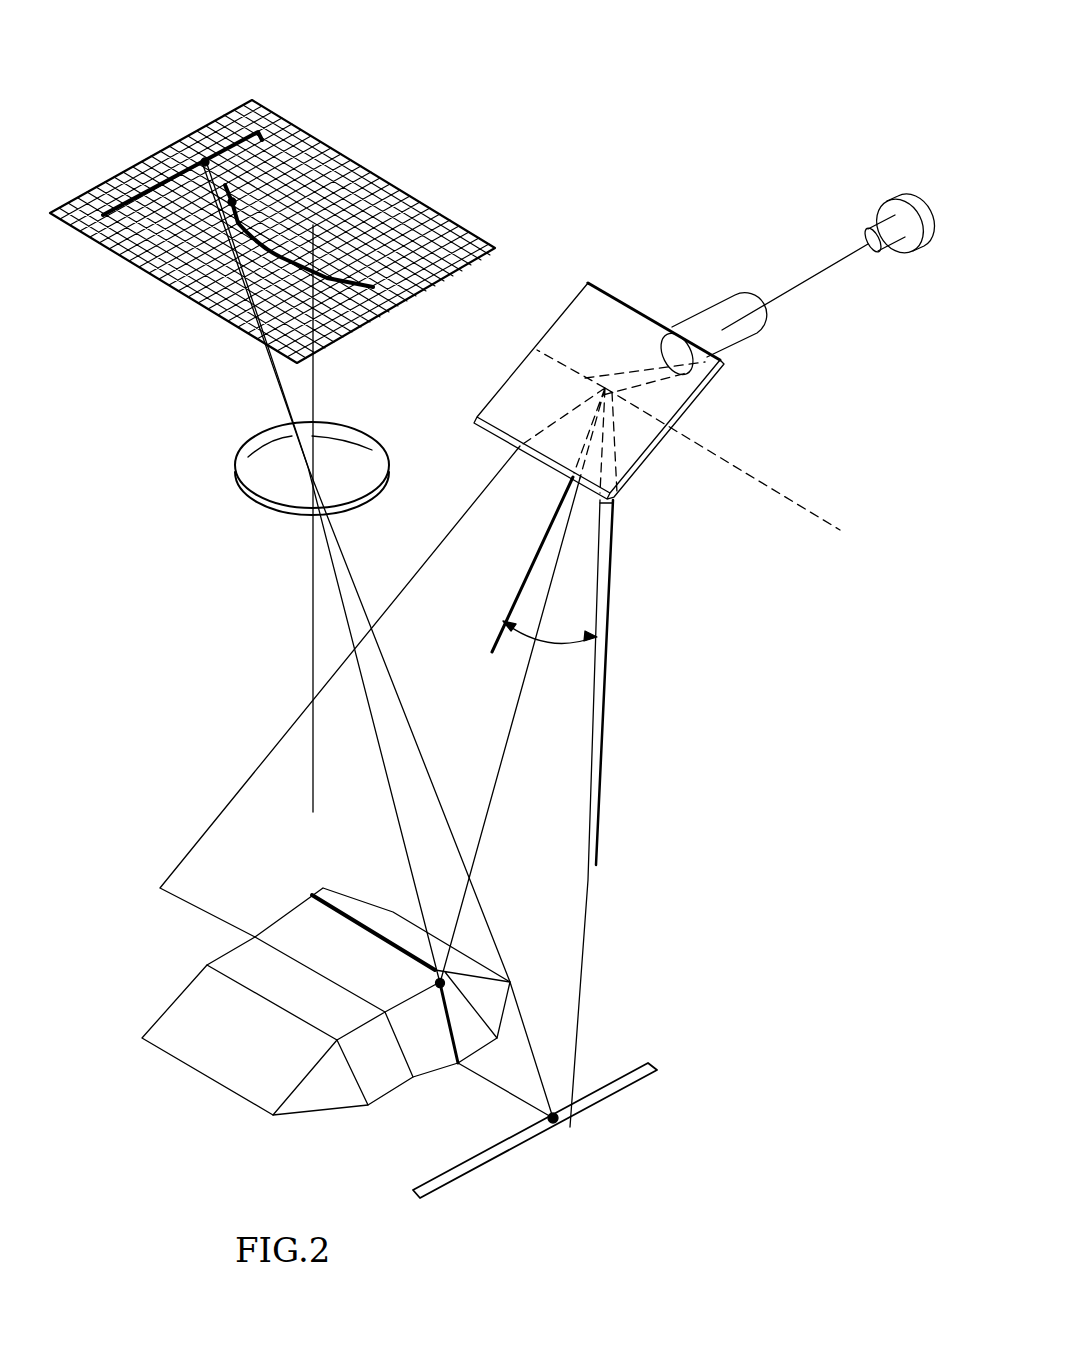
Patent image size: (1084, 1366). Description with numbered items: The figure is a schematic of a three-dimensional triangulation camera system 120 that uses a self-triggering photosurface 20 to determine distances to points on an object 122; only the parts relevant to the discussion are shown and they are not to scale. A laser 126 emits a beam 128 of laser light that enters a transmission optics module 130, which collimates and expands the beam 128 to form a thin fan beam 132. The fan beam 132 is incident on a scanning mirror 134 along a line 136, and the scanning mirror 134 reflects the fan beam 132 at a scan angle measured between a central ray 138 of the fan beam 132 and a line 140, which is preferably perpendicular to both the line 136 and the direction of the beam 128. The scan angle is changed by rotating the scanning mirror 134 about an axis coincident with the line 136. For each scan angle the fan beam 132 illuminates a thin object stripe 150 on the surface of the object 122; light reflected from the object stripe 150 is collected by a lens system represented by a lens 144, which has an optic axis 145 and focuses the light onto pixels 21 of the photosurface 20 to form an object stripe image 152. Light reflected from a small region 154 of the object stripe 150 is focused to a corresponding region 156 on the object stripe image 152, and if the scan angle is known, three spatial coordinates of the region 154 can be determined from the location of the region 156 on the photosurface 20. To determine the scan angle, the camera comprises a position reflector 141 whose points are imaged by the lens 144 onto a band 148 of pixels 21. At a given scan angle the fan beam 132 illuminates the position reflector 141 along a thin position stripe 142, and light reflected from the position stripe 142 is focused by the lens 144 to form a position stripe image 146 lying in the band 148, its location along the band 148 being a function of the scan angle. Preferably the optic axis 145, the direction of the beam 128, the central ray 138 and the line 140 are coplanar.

The 3D triangulation camera system 120 is at (650, 88).
The photosurface 20 is at (410, 162).
The pixels 21 is at (195, 285).
The band 148 is at (233, 143).
The position stripe image 146 is at (200, 160).
The region 156 is at (288, 178).
The object stripe image 152 is at (376, 284).
The lens 144 is at (357, 428).
The optic axis 145 is at (310, 617).
The object 122 is at (267, 1082).
The object stripe 150 is at (370, 928).
The small region 154 is at (443, 980).
The position reflector 141 is at (653, 1065).
The position stripe 142 is at (543, 1127).
The scanning mirror 134 is at (598, 282).
The line 136 is at (568, 362).
The fan beam 132 is at (637, 388).
The transmission optics module 130 is at (738, 352).
The beam 128 is at (817, 273).
The laser 126 is at (893, 200).
The line 140 is at (610, 505).
The central ray 138 is at (537, 543).